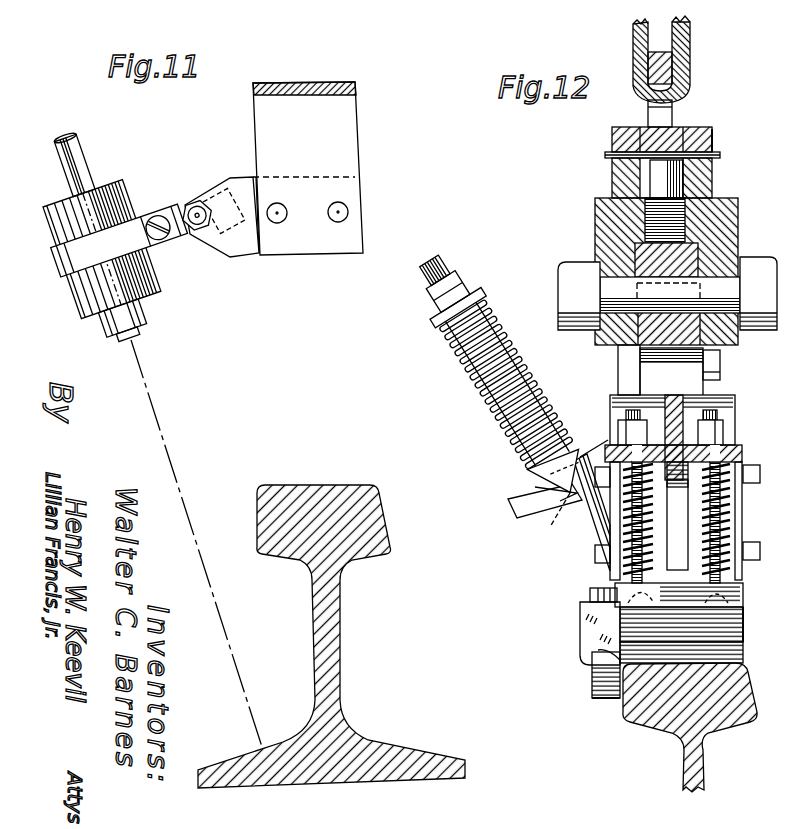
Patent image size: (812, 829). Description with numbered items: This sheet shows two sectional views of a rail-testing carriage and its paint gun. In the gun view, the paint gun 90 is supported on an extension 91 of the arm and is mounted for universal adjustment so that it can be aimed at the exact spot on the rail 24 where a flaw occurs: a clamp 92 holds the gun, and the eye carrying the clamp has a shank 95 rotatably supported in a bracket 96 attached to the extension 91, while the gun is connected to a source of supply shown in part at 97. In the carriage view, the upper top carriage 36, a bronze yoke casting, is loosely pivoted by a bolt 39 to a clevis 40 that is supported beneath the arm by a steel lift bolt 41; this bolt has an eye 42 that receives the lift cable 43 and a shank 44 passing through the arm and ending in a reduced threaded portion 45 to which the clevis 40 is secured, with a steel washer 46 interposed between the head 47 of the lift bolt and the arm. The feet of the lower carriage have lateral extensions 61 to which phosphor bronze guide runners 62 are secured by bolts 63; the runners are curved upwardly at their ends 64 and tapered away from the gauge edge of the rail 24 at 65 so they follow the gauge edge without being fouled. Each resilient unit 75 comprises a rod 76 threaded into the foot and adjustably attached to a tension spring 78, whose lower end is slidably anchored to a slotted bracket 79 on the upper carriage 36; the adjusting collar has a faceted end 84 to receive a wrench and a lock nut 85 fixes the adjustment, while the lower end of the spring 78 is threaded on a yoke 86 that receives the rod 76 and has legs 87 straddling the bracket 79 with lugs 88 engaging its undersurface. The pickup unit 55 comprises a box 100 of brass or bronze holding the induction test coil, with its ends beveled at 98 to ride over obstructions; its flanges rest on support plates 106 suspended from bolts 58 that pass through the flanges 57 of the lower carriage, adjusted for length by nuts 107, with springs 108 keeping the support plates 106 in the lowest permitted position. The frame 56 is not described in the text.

In FIG. 11, the rail 24 is at (305, 485).
In FIG. 12, the rail 24 is at (748, 712).
In FIG. 12, the upper top carriage 36 is at (618, 249).
In FIG. 12, the bolt 39 is at (727, 290).
In FIG. 12, the clevis 40 is at (593, 205).
In FIG. 12, the lift bolt 41 is at (717, 124).
In FIG. 12, the eye 42 is at (668, 108).
In FIG. 12, the lift cable 43 is at (683, 36).
In FIG. 12, the shank 44 is at (655, 178).
In FIG. 12, the reduced threaded portion 45 is at (683, 216).
In FIG. 12, the steel washer 46 is at (714, 154).
In FIG. 12, the head 47 is at (713, 136).
In FIG. 12, the pickup unit 55 is at (745, 616).
In FIG. 12, the frame 56 is at (684, 412).
In FIG. 12, the flanges 57 is at (741, 449).
In FIG. 12, the bolts 58 is at (627, 550).
In FIG. 12, the lateral extensions 61 is at (580, 621).
In FIG. 12, the guide runners 62 is at (593, 684).
In FIG. 12, the bolts 63 is at (590, 595).
In FIG. 12, the upwardly curved ends 64 is at (605, 699).
In FIG. 12, the tapered portion 65 is at (607, 649).
In FIG. 12, the resilient unit 75 is at (497, 432).
In FIG. 12, the rod 76 is at (433, 282).
In FIG. 12, the tension spring 78 is at (497, 417).
In FIG. 12, the slotted bracket 79 is at (517, 505).
In FIG. 12, the faceted end 84 is at (470, 298).
In FIG. 12, the lock nut 85 is at (462, 285).
In FIG. 12, the yoke 86 is at (532, 463).
In FIG. 12, the legs 87 is at (547, 484).
In FIG. 12, the lugs 88 is at (574, 505).
In FIG. 11, the paint gun 90 is at (123, 193).
In FIG. 11, the extension 91 is at (350, 120).
In FIG. 11, the clamp 92 is at (85, 263).
In FIG. 11, the shank 95 is at (197, 212).
In FIG. 11, the bracket 96 is at (238, 247).
In FIG. 11, the source of supply 97 is at (83, 148).
In FIG. 12, the beveled ends 98 is at (739, 648).
In FIG. 12, the box 100 is at (744, 628).
In FIG. 12, the support plates 106 is at (743, 588).
In FIG. 12, the nuts 107 is at (618, 438).
In FIG. 12, the springs 108 is at (630, 523).